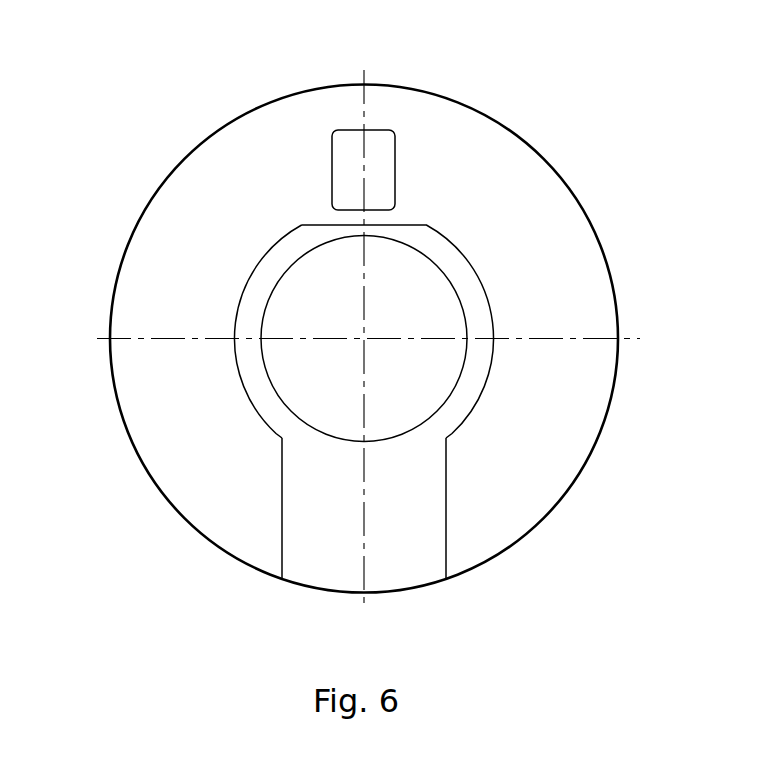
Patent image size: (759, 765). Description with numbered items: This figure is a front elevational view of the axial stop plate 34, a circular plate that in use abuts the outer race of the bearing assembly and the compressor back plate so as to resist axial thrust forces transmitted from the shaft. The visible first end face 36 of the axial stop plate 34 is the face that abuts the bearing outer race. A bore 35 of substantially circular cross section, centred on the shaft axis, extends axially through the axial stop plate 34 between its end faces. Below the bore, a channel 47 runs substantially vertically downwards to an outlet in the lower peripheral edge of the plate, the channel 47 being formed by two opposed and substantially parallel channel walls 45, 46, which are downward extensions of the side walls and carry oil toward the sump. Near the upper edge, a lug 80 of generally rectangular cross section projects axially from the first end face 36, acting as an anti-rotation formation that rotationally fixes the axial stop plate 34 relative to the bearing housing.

The axial stop plate 34 is at (603, 127).
The first end face 36 is at (249, 162).
The lug 80 is at (380, 157).
The bore 35 is at (297, 372).
The channel 47 is at (314, 535).
The channel wall 46 is at (282, 490).
The channel wall 45 is at (447, 508).